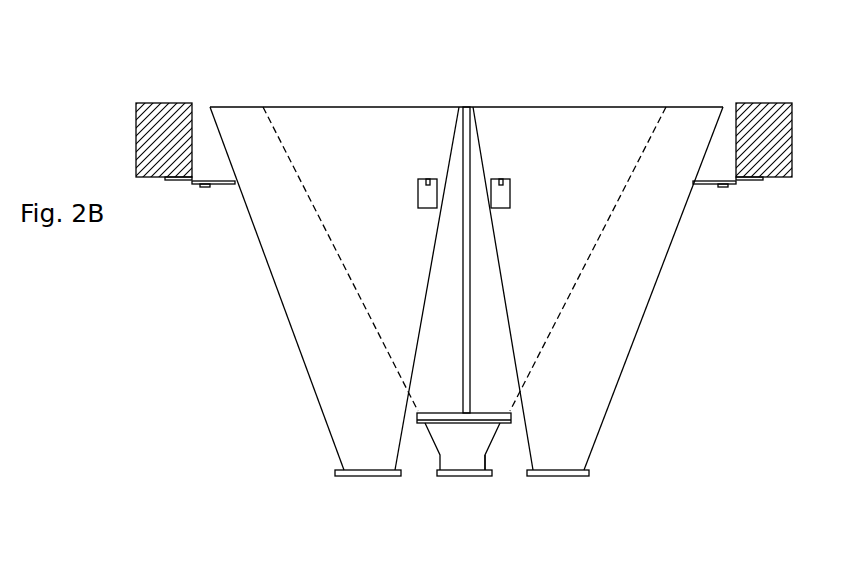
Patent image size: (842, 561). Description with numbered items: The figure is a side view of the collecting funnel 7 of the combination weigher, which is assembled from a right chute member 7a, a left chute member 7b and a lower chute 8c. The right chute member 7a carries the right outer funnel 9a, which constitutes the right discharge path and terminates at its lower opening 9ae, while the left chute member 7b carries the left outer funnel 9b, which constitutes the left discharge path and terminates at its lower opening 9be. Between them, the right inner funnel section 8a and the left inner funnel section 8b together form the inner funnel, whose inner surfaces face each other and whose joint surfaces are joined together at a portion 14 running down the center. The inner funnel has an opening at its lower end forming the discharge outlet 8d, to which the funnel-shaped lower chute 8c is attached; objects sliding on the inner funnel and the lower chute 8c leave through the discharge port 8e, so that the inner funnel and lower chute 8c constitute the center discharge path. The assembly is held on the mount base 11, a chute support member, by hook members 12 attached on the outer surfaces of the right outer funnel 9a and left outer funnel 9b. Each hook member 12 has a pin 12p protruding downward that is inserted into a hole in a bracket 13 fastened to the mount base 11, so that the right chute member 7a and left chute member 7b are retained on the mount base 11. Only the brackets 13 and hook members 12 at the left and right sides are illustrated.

The collecting funnel 7 is at (603, 104).
The right chute member 7a is at (627, 319).
The left chute member 7b is at (308, 319).
The right inner funnel section 8a is at (586, 264).
The left inner funnel section 8b is at (350, 267).
The lower chute 8c is at (486, 456).
The discharge outlet 8d is at (437, 422).
The discharge port 8e is at (458, 476).
The right outer funnel 9a is at (641, 322).
The left outer funnel 9b is at (299, 348).
The discharge opening of first hopper section 9ae is at (560, 476).
The discharge opening of second hopper section 9be is at (364, 476).
The mount base 11 is at (136, 140).
The hook member 12 is at (222, 181).
The pin 12p is at (206, 187).
The bracket 13 is at (167, 181).
The joined portion 14 is at (470, 350).